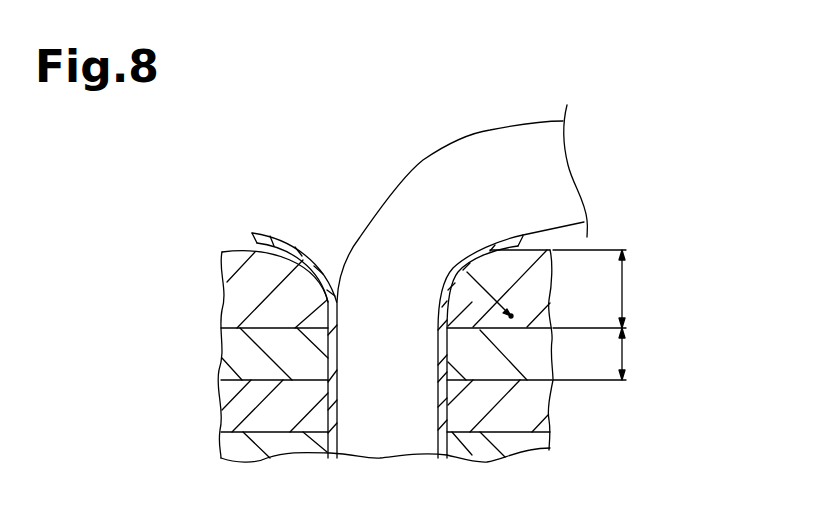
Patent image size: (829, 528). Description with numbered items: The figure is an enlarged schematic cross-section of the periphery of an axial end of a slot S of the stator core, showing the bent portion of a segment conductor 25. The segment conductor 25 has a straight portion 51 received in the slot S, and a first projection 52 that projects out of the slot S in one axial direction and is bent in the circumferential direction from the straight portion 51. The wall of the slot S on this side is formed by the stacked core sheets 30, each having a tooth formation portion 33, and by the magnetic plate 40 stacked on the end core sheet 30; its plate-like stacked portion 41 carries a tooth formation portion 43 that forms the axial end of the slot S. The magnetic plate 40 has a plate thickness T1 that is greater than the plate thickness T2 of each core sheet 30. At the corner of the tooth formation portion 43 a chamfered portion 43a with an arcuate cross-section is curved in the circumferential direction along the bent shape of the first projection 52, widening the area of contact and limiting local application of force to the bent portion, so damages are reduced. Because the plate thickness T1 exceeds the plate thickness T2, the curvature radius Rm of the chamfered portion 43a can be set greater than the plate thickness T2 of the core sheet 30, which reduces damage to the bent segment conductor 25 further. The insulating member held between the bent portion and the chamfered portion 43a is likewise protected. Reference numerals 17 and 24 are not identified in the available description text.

The coating layer on first electrode 17 is at (338, 343).
The substrate 24 is at (280, 447).
The segment conductor 25 is at (420, 167).
The core sheet 30 is at (227, 410).
The tooth formation portion 33 is at (545, 392).
The magnetic plate 40 is at (220, 354).
The stacked portion 41 is at (234, 298).
The tooth formation portion 43 is at (553, 282).
The chamfered portion 43a is at (462, 268).
The straight portion 51 is at (402, 445).
The first projection 52 is at (489, 142).
The slot S is at (337, 452).
The curvature radius Rm is at (481, 296).
The plate thickness T1 is at (624, 287).
The plate thickness T2 is at (624, 355).